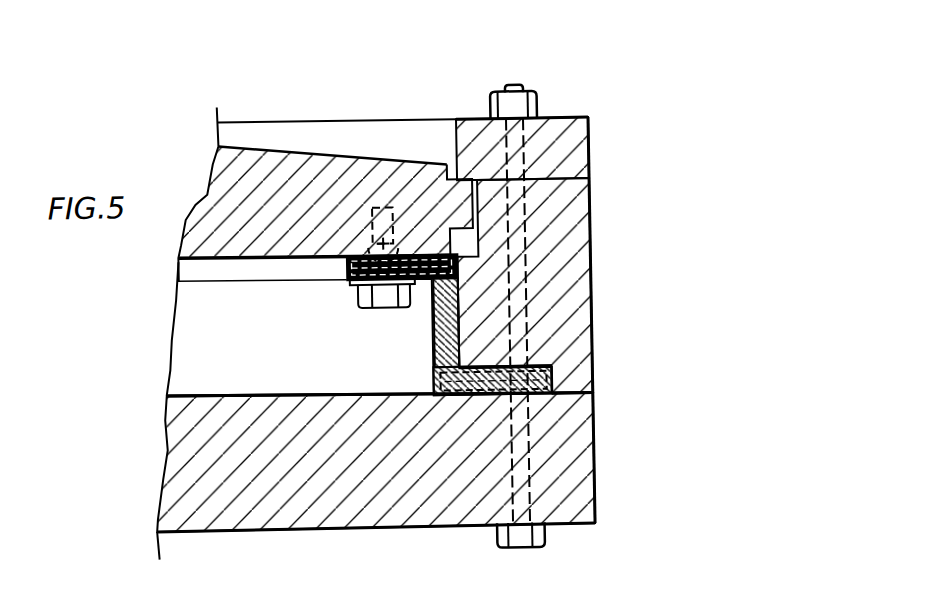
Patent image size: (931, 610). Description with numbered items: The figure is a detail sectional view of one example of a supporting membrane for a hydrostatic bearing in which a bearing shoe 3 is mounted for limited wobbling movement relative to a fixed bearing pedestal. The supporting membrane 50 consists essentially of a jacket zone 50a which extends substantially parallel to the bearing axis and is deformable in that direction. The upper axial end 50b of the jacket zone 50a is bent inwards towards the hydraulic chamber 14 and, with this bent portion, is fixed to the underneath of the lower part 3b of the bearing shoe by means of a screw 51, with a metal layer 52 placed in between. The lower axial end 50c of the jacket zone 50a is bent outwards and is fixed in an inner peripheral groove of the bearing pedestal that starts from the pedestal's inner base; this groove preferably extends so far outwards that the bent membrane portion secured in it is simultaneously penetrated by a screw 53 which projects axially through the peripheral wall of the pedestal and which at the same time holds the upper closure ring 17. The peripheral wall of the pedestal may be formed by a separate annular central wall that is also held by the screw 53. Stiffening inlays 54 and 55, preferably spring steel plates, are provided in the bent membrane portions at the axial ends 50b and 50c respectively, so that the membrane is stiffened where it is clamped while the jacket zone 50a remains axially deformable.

The bearing shoe 3 is at (270, 142).
The lower part of the bearing shoe 3b is at (329, 165).
The upper closure ring 17 is at (580, 132).
The screw 53 is at (513, 89).
The stiffening inlay 54 is at (360, 252).
The screw 51 is at (390, 245).
The supporting membrane 50 is at (428, 327).
The jacket zone 50a is at (449, 308).
The upper axial end 50b is at (453, 268).
The lower axial end 50c is at (432, 392).
The metal layer 52 is at (349, 277).
The stiffening inlay 55 is at (480, 373).
The hydraulic chamber 14 is at (199, 338).